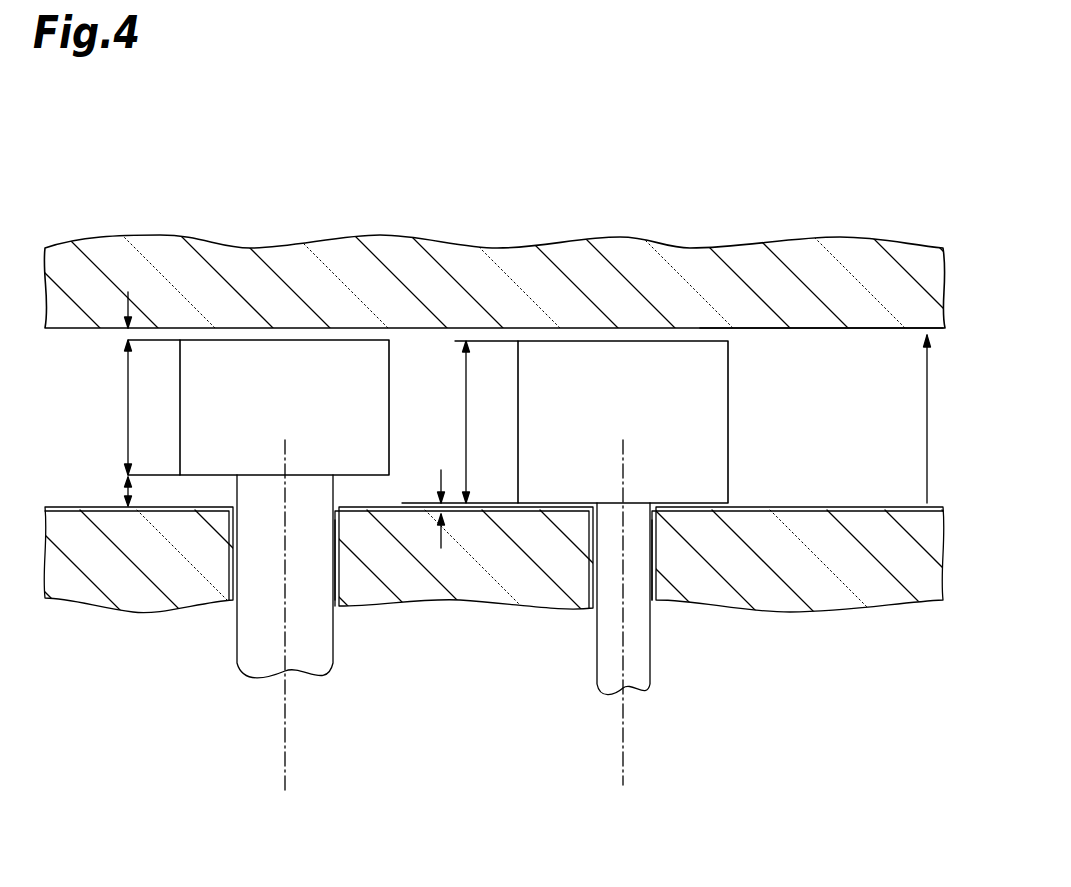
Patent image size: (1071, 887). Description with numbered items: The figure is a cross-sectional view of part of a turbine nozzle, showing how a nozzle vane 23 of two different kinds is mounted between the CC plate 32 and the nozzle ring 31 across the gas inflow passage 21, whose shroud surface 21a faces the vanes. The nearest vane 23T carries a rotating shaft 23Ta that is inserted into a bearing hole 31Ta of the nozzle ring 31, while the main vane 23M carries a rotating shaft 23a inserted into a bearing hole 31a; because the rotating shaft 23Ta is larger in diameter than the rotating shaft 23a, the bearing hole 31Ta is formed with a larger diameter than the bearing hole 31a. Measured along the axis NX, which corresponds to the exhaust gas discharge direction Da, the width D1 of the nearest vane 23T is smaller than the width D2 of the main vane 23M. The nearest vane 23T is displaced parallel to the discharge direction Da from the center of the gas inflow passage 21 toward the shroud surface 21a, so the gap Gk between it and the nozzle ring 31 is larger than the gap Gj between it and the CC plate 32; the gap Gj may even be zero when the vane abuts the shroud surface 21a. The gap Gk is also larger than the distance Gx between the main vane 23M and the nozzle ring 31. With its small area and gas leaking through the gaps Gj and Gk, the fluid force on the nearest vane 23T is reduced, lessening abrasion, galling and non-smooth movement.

The CC plate 32 is at (888, 285).
The nozzle ring 31 is at (880, 588).
The bearing hole 31Ta is at (336, 548).
The bearing hole 31a is at (652, 558).
The nozzle vane 23 is at (454, 344).
The nearest vane 23T is at (289, 372).
The main vane 23M is at (615, 370).
The rotating shaft 23Ta is at (263, 588).
The rotating shaft 23a is at (610, 613).
The axis NX is at (283, 757).
The shroud surface 21a is at (805, 330).
The gas inflow passage 21 is at (882, 433).
The width of the nearest vane D1 is at (136, 407).
The width of the main vane D2 is at (460, 422).
The gap Gj is at (128, 338).
The gap Gk is at (127, 492).
The distance Gx is at (440, 488).
The exhaust gas discharge direction Da is at (925, 450).